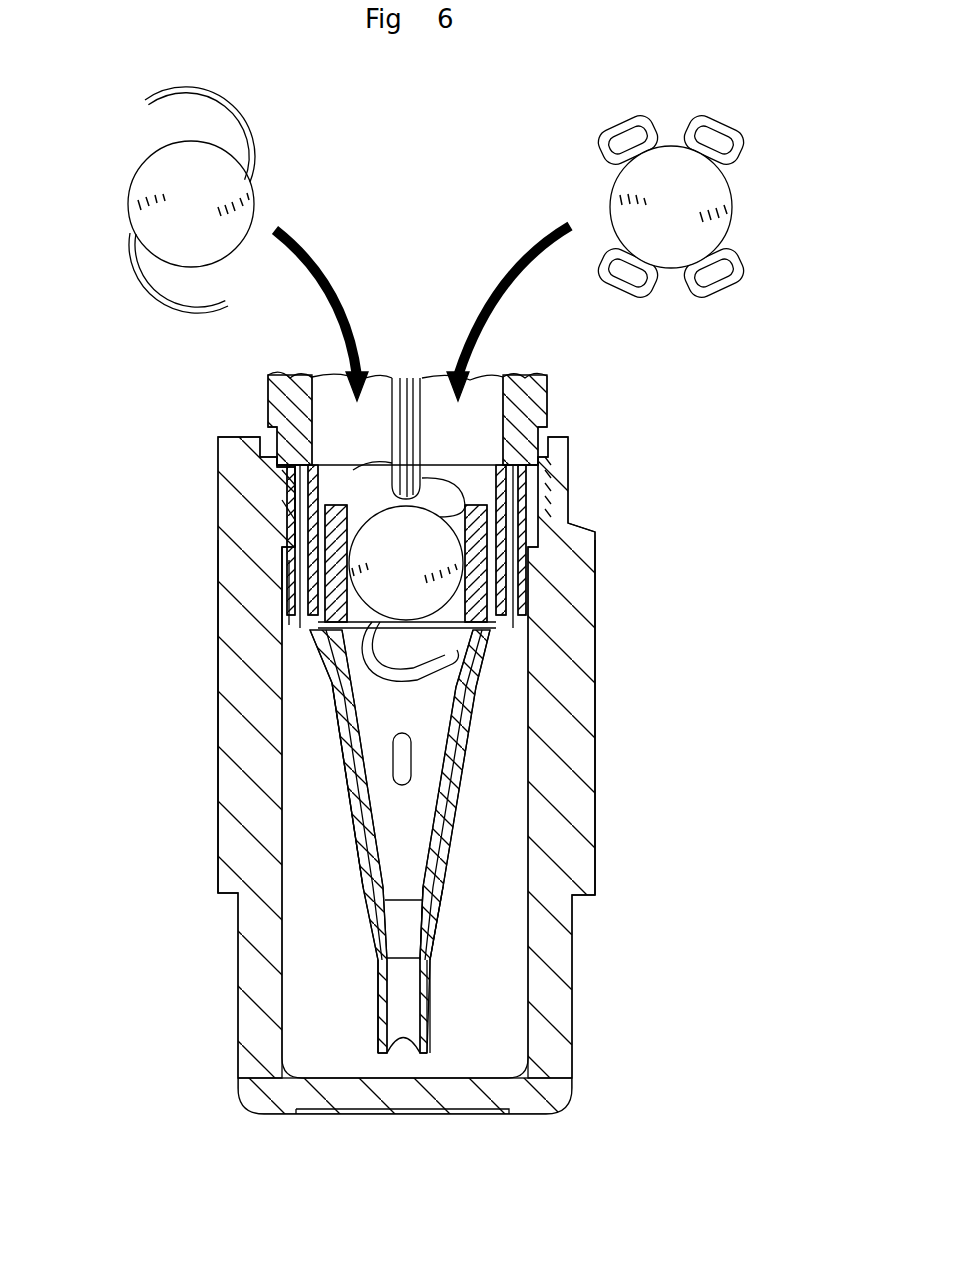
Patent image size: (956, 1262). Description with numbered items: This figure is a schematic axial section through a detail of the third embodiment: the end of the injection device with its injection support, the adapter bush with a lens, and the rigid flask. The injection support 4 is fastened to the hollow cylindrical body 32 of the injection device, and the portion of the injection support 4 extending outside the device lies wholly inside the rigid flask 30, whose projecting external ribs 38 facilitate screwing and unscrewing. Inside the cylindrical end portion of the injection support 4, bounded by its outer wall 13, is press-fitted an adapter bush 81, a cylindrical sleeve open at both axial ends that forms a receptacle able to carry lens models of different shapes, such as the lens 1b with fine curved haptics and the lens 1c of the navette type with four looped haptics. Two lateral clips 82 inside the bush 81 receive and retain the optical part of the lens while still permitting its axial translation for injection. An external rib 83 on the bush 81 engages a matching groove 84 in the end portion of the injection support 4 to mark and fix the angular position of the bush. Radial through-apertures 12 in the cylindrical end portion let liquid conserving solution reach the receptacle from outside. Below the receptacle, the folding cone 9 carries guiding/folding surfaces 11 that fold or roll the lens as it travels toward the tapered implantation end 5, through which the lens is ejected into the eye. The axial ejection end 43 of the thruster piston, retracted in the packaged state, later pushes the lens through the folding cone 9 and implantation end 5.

The lens 1b is at (233, 200).
The lens 1c is at (637, 190).
The injection support 4 is at (310, 650).
The implantation end 5 is at (403, 1003).
The folding cone 9 is at (443, 850).
The guiding/folding surfaces 11 is at (330, 698).
The radial through-apertures 12 is at (400, 763).
The outer wall 13 is at (518, 626).
The rigid flask 30 is at (245, 990).
The hollow cylindrical body 32 is at (285, 405).
The projecting external ribs 38 is at (222, 832).
The axial ejection end 43 is at (430, 462).
The adapter bush 81 is at (428, 548).
The lateral clips 82 is at (290, 610).
The external rib 83 is at (300, 488).
The groove 84 is at (300, 520).